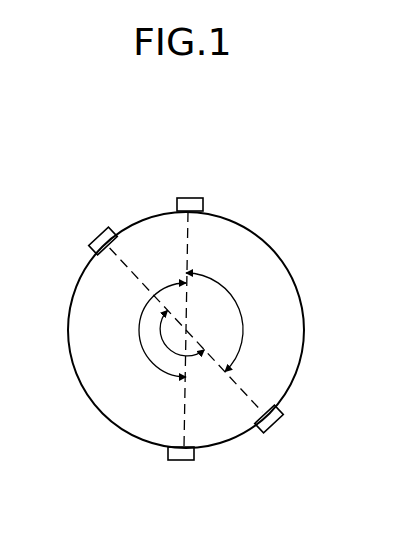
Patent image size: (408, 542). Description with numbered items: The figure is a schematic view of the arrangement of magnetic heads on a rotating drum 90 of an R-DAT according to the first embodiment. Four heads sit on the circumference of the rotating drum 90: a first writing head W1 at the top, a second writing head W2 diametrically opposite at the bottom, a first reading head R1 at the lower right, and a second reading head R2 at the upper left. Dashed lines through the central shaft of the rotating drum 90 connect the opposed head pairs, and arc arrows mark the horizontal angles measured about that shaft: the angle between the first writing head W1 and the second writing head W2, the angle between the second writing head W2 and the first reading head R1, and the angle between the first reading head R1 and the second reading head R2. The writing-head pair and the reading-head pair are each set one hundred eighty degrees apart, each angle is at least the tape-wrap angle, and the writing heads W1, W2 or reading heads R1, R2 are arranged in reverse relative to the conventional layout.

The rotating drum 90 is at (293, 278).
The first writing head W1 is at (188, 186).
The second writing head W2 is at (213, 502).
The first reading head R1 is at (285, 432).
The second reading head R2 is at (82, 228).